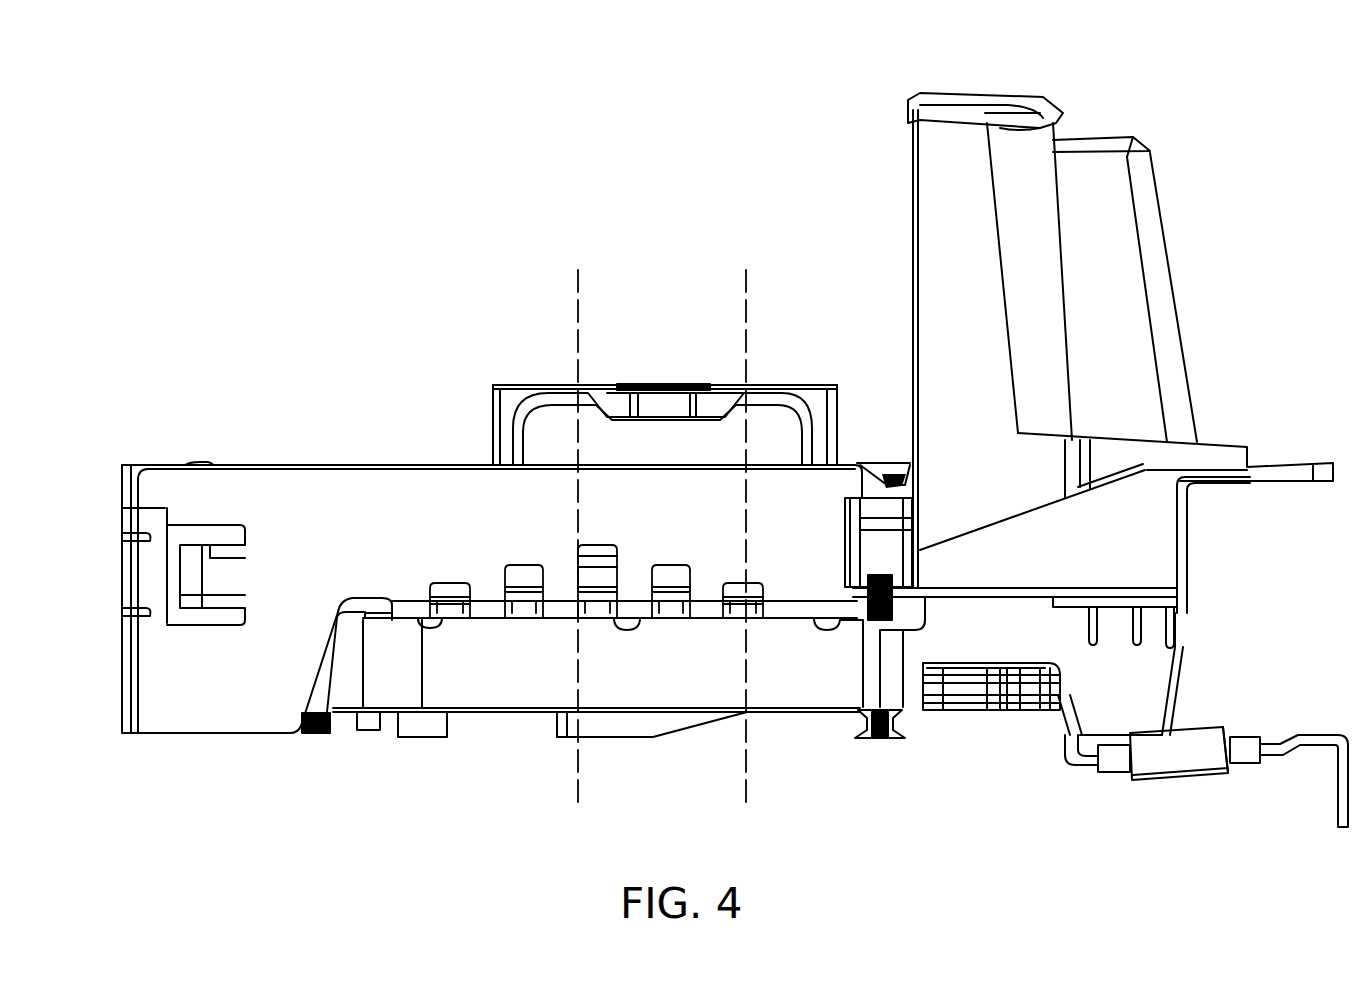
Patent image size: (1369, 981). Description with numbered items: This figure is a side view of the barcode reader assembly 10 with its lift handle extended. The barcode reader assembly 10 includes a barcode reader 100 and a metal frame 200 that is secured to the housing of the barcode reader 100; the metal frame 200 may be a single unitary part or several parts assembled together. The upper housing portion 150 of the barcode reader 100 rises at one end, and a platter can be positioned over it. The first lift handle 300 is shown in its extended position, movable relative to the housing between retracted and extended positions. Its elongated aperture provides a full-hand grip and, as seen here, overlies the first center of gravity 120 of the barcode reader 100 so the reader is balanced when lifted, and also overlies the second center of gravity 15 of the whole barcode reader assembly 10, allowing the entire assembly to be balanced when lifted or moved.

The barcode reader assembly 10 is at (352, 177).
The second center of gravity 15 is at (577, 300).
The barcode reader 100 is at (1010, 746).
The first center of gravity 120 is at (745, 300).
The upper housing portion 150 is at (1006, 80).
The metal frame 200 is at (227, 724).
The first lift handle 300 is at (488, 372).